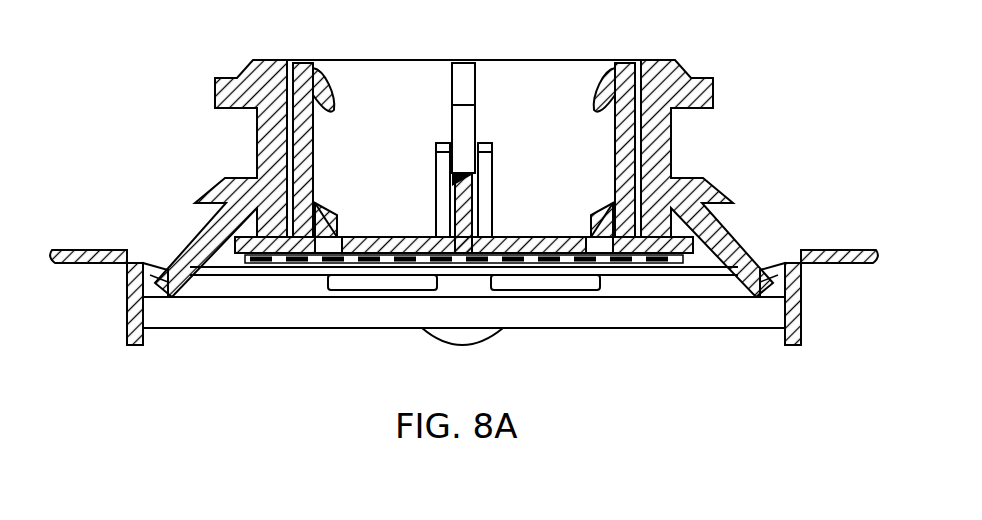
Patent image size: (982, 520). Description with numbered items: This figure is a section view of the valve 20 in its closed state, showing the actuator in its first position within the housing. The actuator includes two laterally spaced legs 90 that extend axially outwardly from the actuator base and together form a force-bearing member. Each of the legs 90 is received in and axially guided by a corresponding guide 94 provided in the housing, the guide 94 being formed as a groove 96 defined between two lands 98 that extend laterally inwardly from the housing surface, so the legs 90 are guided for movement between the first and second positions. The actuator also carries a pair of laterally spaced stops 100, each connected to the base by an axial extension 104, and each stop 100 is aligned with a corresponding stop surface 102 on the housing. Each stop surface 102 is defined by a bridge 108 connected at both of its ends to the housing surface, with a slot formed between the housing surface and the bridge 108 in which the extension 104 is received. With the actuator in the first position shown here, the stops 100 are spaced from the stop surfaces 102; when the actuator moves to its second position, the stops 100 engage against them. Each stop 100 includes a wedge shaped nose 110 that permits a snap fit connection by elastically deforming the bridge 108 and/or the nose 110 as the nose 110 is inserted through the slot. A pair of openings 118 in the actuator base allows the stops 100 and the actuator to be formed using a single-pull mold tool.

The dispensing valve assembly 20 is at (127, 122).
The legs 90 is at (458, 119).
The guide 94 is at (430, 132).
The groove 96 is at (482, 132).
The lands 98 is at (440, 166).
The stops 100 is at (312, 82).
The stop surfaces 102 is at (318, 208).
The axial extension 104 is at (303, 170).
The bridge 108 is at (338, 226).
The wedge shaped nose 110 is at (320, 92).
The openings 118 is at (330, 252).